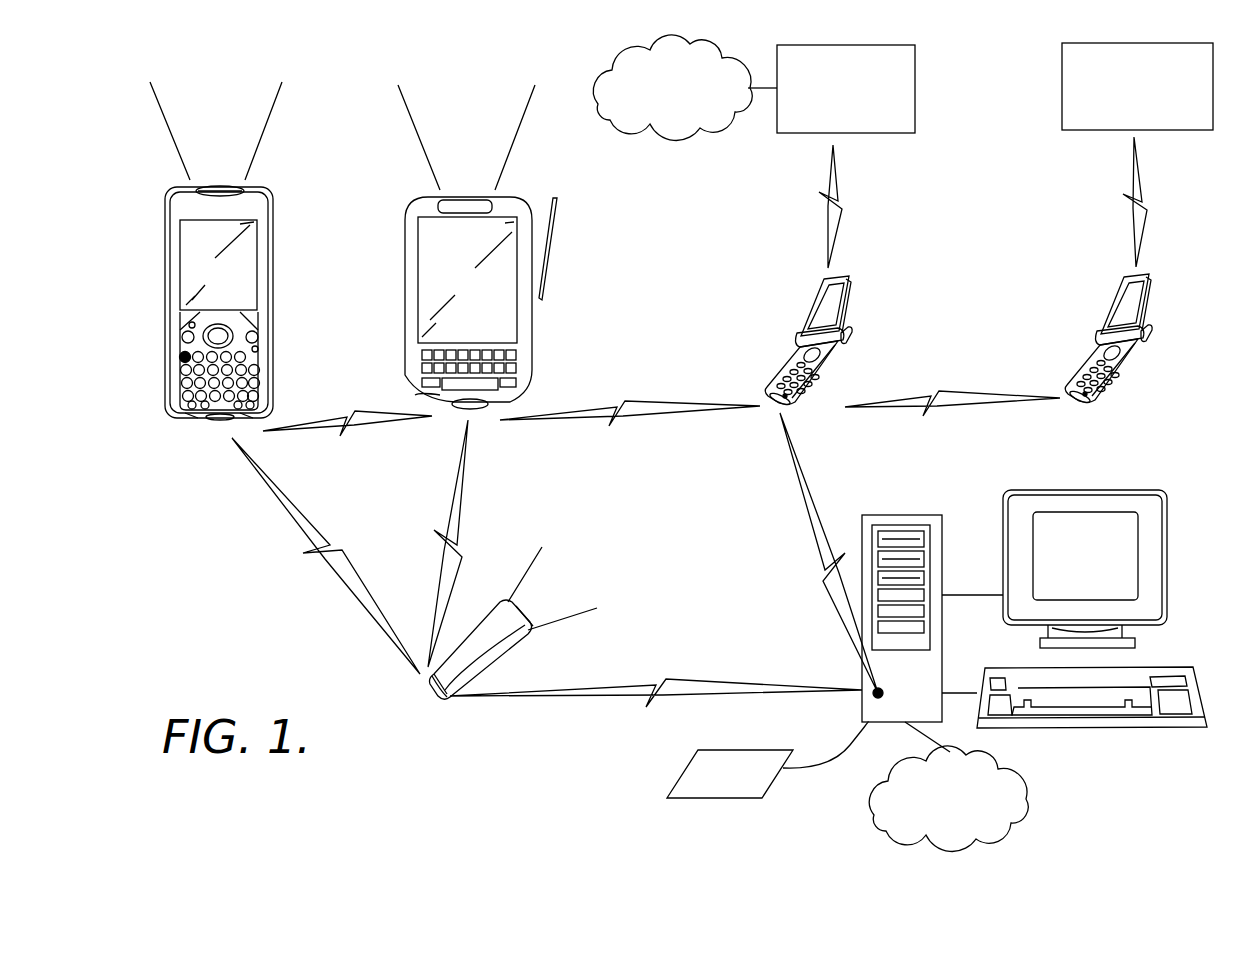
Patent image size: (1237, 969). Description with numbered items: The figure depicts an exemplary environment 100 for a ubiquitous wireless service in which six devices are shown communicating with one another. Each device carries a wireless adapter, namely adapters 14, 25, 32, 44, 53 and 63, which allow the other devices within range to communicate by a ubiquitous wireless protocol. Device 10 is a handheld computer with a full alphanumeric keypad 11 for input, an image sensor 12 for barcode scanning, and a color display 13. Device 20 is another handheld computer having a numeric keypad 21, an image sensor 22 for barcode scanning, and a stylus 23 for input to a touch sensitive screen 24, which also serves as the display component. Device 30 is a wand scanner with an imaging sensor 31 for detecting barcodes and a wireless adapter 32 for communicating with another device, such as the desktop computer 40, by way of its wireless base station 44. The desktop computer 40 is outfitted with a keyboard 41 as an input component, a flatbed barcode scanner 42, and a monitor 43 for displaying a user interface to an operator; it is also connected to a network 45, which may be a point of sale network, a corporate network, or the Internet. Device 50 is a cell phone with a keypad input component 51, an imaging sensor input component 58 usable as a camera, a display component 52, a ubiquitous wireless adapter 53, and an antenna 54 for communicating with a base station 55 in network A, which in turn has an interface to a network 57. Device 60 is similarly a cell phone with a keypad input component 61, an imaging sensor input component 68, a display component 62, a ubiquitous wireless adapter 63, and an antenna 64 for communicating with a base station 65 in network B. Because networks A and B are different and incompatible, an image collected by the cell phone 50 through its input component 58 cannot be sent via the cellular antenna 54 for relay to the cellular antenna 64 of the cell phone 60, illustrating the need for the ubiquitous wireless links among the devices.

The environment 100 is at (168, 540).
The handheld computer 10 is at (168, 345).
The alphanumeric keypad 11 is at (262, 366).
The image sensor 12 is at (222, 186).
The color display 13 is at (258, 260).
The wireless adapter 14 is at (207, 421).
The handheld computer 20 is at (406, 290).
The numeric keypad 21 is at (519, 357).
The image sensor 22 is at (468, 195).
The stylus 23 is at (556, 243).
The touch sensitive screen 24 is at (518, 314).
The wireless adapter 25 is at (478, 407).
The wand scanner 30 is at (487, 656).
The imaging sensor 31 is at (518, 614).
The wireless adapter 32 is at (434, 690).
The desktop computer 40 is at (908, 515).
The keyboard 41 is at (1080, 730).
The flatbed barcode scanner 42 is at (712, 750).
The monitor 43 is at (1087, 490).
The wireless base station 44 is at (872, 698).
The network 45 is at (1026, 792).
The cell phone 50 is at (845, 326).
The keypad input component 51 is at (788, 363).
The display component 52 is at (822, 306).
The ubiquitous wireless adapter 53 is at (787, 400).
The antenna 54 is at (850, 338).
The base station 55 is at (915, 89).
The network 57 is at (598, 103).
The imaging sensor input component 58 is at (851, 298).
The cell phone 60 is at (1122, 356).
The keypad input component 61 is at (1079, 365).
The display component 62 is at (1108, 301).
The ubiquitous wireless adapter 63 is at (1107, 413).
The antenna 64 is at (1163, 348).
The base station 65 is at (1062, 88).
The imaging sensor input component 68 is at (1173, 304).